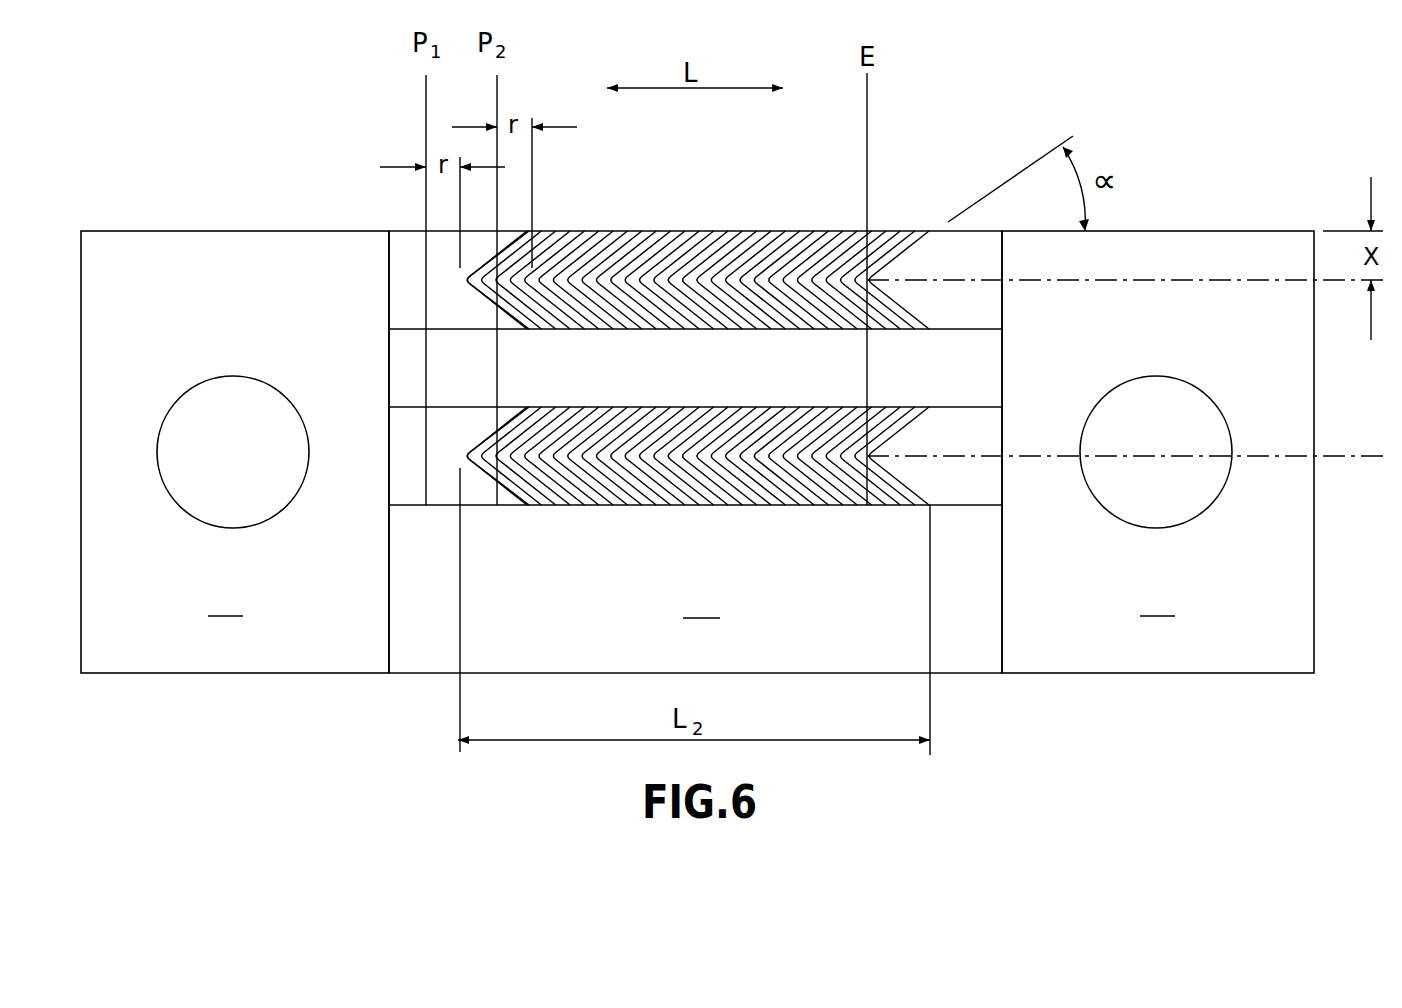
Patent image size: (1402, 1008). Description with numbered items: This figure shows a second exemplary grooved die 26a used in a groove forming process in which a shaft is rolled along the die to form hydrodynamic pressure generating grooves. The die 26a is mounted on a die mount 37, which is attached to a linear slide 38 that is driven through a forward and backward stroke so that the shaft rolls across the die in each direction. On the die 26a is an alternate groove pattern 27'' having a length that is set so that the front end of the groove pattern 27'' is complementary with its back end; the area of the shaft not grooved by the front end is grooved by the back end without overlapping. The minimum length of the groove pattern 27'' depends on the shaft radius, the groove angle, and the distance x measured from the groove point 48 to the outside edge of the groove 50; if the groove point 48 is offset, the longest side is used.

The die 26a is at (697, 467).
The linear slide 38 is at (697, 452).
The die mount 37 is at (695, 452).
The groove 50 is at (603, 231).
The groove pattern 27'' is at (698, 367).
The groove point 48 is at (466, 280).